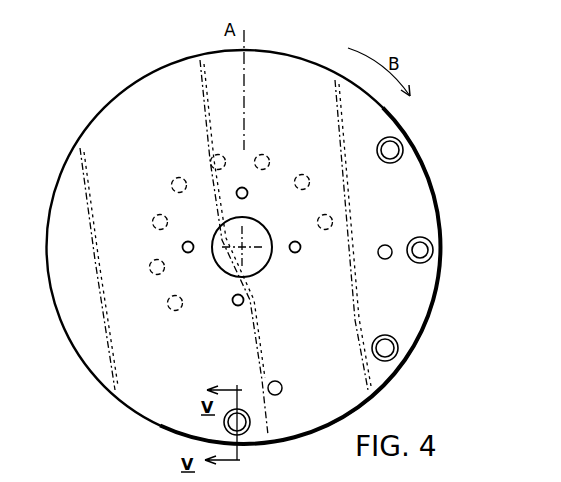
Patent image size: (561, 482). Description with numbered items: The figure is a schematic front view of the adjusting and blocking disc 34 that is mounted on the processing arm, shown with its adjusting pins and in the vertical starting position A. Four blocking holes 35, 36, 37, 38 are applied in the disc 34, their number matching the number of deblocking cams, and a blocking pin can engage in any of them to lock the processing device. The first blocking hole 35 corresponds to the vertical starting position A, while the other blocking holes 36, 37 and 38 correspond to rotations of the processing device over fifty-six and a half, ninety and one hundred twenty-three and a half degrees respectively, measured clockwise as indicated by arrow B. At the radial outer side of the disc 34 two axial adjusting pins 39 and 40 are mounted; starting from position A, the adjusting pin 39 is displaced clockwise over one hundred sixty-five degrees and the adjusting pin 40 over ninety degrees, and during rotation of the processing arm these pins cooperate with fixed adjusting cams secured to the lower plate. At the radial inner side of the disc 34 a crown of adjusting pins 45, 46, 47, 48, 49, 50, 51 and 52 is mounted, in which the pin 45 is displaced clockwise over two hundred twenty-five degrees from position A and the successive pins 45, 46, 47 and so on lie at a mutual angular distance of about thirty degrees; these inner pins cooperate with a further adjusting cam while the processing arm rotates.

The adjusting and blocking disc 34 is at (310, 80).
The blocking hole 35 is at (245, 430).
The blocking hole 36 is at (394, 348).
The blocking hole 37 is at (414, 258).
The blocking hole 38 is at (392, 150).
The axial adjusting pin 39 is at (281, 384).
The axial adjusting pin 40 is at (385, 259).
The adjusting pin 45 is at (168, 304).
The adjusting pin 46 is at (150, 267).
The adjusting pin 47 is at (153, 222).
The adjusting pin 48 is at (172, 185).
The adjusting pin 49 is at (212, 155).
The adjusting pin 50 is at (260, 155).
The adjusting pin 51 is at (306, 176).
The adjusting pin 52 is at (333, 219).